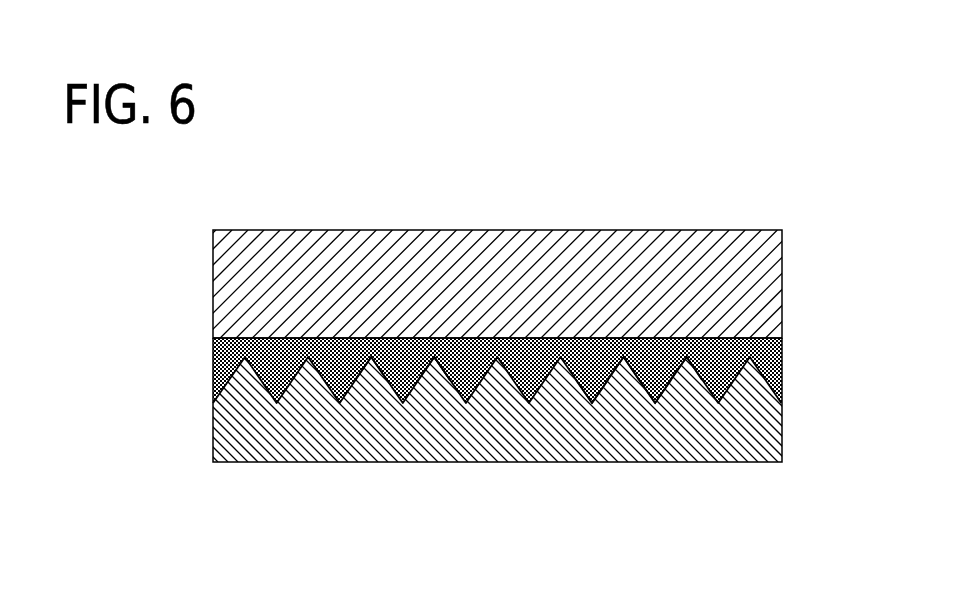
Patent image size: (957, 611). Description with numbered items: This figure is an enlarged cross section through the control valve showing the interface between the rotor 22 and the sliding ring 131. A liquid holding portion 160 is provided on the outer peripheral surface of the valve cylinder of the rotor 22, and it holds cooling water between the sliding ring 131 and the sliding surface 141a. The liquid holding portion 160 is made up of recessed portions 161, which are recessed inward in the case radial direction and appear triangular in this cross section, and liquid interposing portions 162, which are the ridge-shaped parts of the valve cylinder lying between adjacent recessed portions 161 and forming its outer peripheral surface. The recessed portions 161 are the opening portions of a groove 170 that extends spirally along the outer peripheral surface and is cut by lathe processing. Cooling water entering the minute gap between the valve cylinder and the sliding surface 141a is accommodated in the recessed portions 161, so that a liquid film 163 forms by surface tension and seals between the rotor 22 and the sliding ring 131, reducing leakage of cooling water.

The sliding ring 131 is at (557, 240).
The liquid holding portion 160 is at (716, 362).
The liquid film 163 is at (213, 342).
The sliding surface 141a is at (268, 342).
The liquid interposing portion 162 is at (434, 357).
The recessed portion 161 is at (612, 394).
The groove 170 is at (456, 364).
The rotor 22 is at (713, 463).